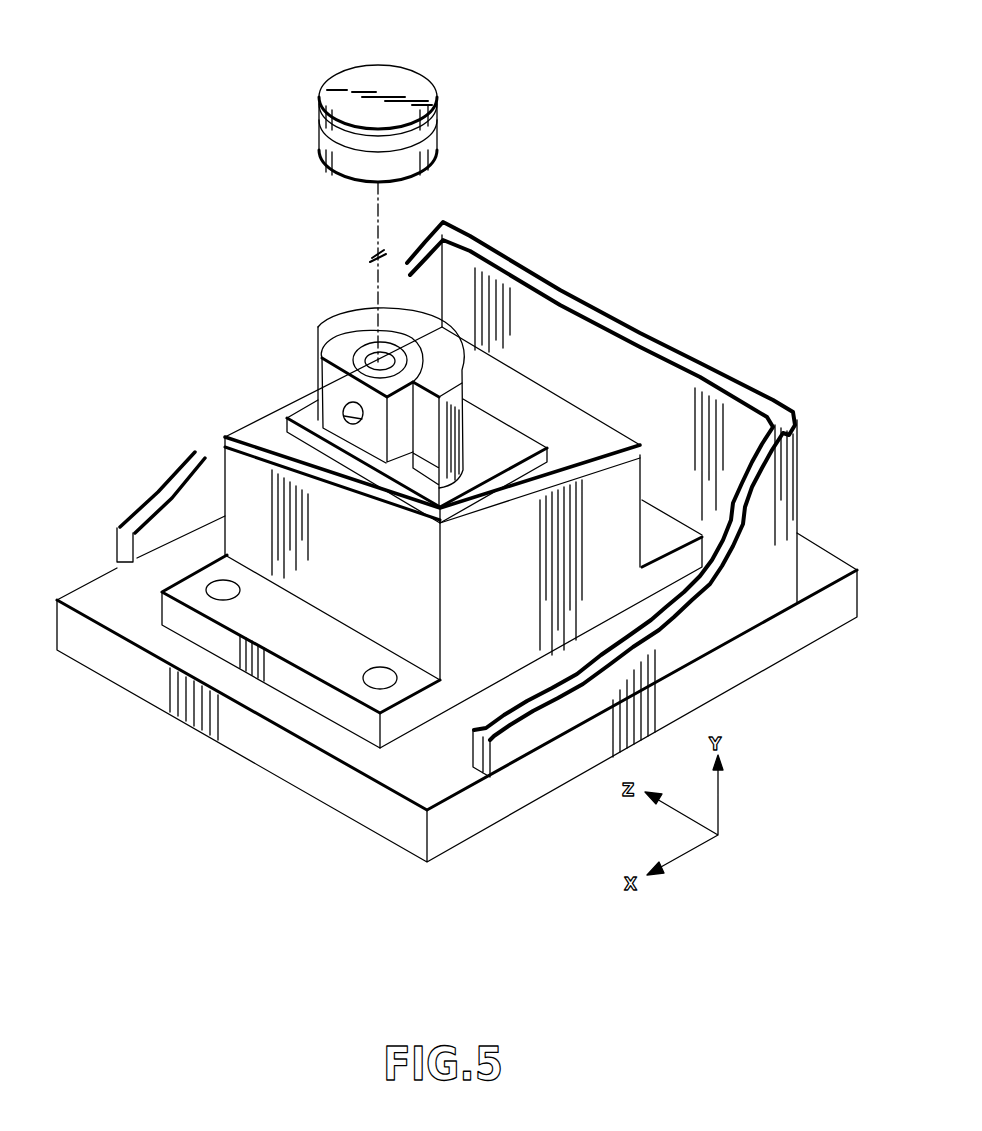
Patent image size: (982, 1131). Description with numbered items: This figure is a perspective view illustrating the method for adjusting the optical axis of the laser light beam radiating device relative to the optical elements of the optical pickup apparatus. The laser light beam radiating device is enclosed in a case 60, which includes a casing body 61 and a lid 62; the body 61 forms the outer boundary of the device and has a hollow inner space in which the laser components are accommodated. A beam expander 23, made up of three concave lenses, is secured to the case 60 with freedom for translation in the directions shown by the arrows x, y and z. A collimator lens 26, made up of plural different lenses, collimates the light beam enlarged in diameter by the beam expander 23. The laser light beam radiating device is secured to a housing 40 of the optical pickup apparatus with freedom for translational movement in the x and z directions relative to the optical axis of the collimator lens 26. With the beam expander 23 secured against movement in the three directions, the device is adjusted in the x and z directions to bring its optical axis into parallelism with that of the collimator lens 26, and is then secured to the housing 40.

The beam expander 23 is at (357, 345).
The collimator lens 26 is at (413, 93).
The housing 40 is at (727, 665).
The case 60 is at (361, 537).
The casing body 61 is at (240, 498).
The lid 62 is at (224, 433).